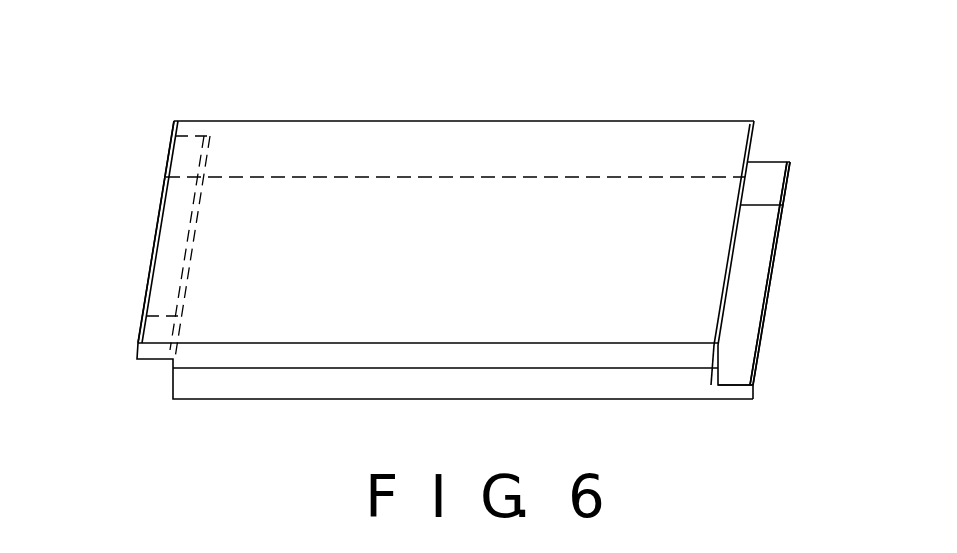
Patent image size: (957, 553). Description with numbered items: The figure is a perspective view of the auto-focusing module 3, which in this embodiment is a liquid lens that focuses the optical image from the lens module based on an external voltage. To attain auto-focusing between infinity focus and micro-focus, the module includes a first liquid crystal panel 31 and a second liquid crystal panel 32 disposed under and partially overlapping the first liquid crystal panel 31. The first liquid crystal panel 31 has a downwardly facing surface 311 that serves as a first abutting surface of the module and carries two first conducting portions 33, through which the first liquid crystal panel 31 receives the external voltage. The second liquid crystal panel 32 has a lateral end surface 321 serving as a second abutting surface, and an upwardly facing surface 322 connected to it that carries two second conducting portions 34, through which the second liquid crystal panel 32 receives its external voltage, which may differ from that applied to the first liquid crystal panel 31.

The auto-focusing module 3 is at (477, 251).
The first liquid crystal panel 31 is at (150, 359).
The downwardly facing surface 311 is at (172, 240).
The second liquid crystal panel 32 is at (625, 385).
The lateral end surface 321 is at (765, 323).
The upwardly facing surface 322 is at (752, 265).
The first conducting portion 33 is at (187, 165).
The second conducting portion 34 is at (768, 183).